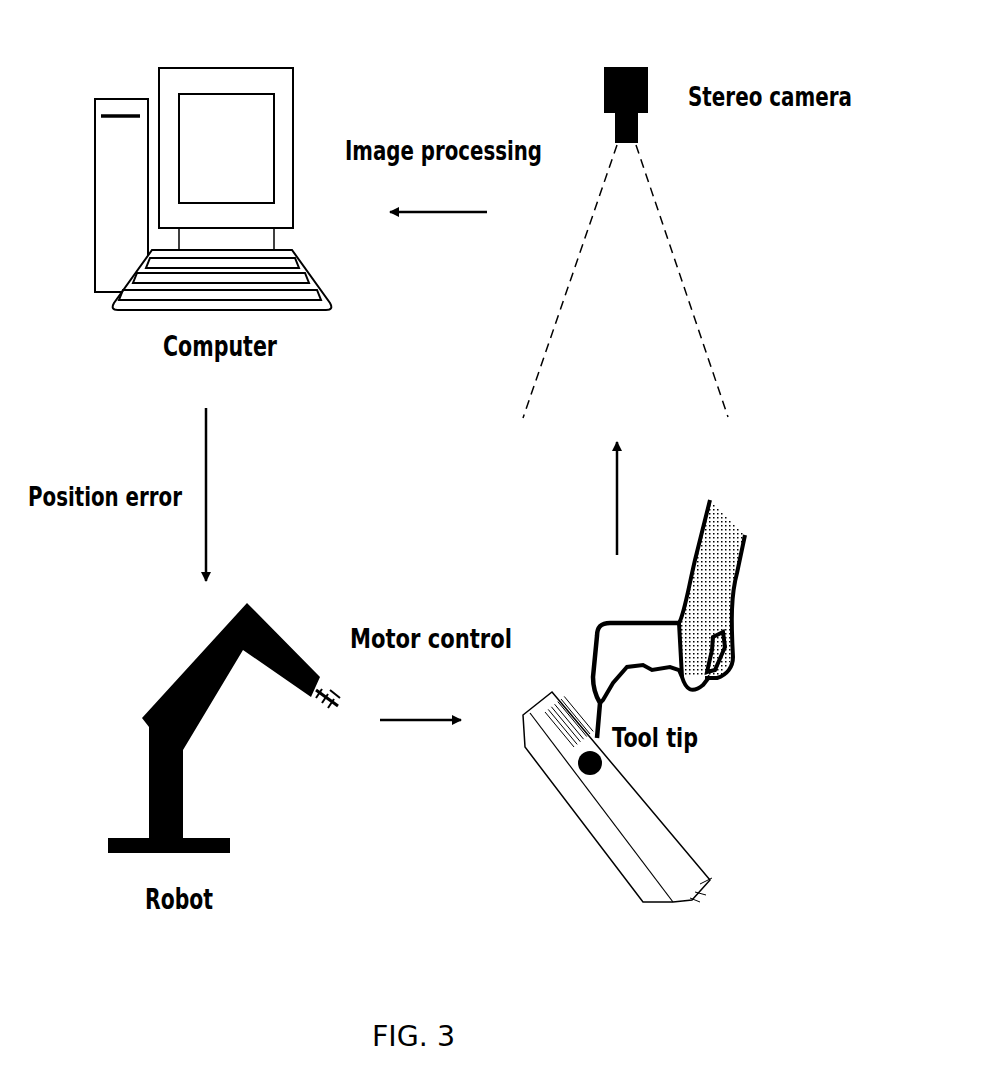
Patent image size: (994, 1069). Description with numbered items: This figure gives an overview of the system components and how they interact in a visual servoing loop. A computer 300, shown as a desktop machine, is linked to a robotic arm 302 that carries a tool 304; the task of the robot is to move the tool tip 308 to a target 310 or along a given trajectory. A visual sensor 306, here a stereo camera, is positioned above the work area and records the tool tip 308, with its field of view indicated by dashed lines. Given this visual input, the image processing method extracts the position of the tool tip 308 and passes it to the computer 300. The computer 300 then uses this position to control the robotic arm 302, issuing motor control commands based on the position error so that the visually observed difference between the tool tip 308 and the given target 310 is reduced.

The computer 300 is at (247, 68).
The robotic arm 302 is at (293, 688).
The tool 304 is at (602, 660).
The visual sensor 306 is at (604, 92).
The tool tip 308 is at (598, 716).
The target 310 is at (580, 766).